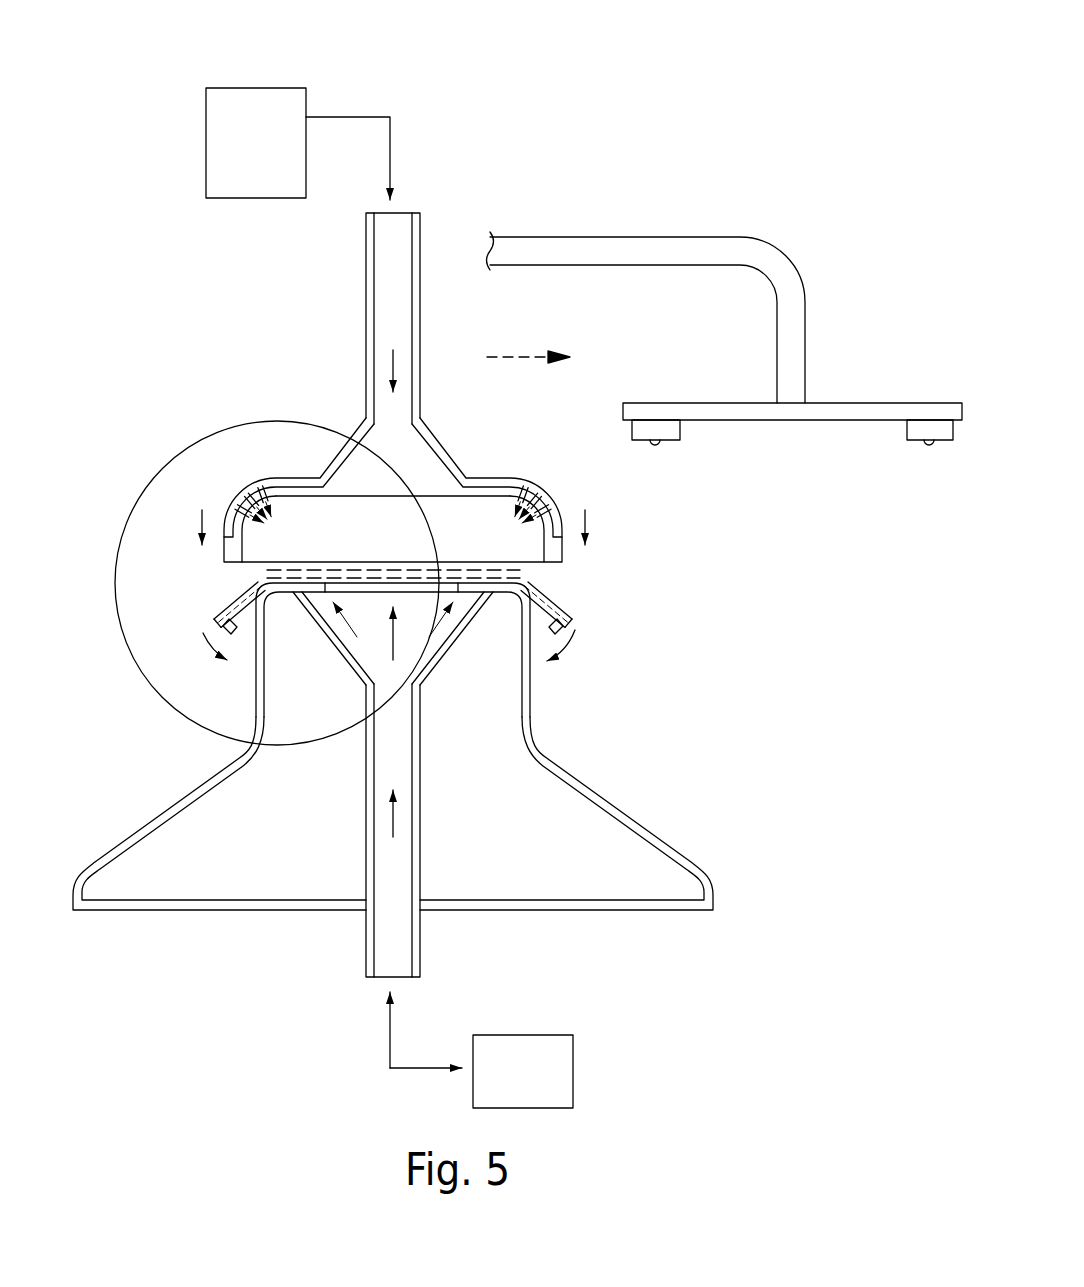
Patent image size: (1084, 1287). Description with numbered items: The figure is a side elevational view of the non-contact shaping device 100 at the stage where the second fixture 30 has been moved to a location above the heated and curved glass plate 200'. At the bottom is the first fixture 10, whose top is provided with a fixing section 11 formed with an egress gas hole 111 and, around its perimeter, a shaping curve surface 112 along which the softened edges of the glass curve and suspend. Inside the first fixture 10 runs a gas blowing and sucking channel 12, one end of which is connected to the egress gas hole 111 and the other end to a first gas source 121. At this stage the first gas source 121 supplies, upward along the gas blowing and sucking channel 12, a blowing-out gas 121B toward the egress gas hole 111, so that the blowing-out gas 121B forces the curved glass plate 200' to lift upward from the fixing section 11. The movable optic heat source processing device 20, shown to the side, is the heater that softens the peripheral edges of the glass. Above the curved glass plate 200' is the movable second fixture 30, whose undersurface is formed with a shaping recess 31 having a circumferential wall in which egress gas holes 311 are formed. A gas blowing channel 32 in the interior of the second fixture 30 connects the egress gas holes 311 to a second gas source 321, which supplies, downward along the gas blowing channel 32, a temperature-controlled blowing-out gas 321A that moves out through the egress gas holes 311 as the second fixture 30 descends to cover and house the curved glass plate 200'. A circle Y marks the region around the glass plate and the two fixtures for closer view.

The non-contact shaping device 100 is at (706, 176).
The second gas source 321 is at (260, 88).
The second fixture 30 is at (423, 248).
The gas blowing channel 32 is at (385, 290).
The shaping recess 31 is at (561, 552).
The egress gas hole 311 is at (260, 485).
The blowing-out gas 321A is at (390, 366).
The egress gas hole 111 is at (352, 588).
The curved glass plate 200' is at (321, 578).
The enlarged region Y is at (127, 650).
The optic heat source processing device 20 is at (878, 403).
The first fixture 10 is at (205, 912).
The fixing section 11 is at (250, 675).
The shaping curve surface 112 is at (258, 586).
The blowing-out gas 121B is at (337, 607).
The gas blowing and sucking channel 12 is at (385, 957).
The first gas source 121 is at (523, 1035).